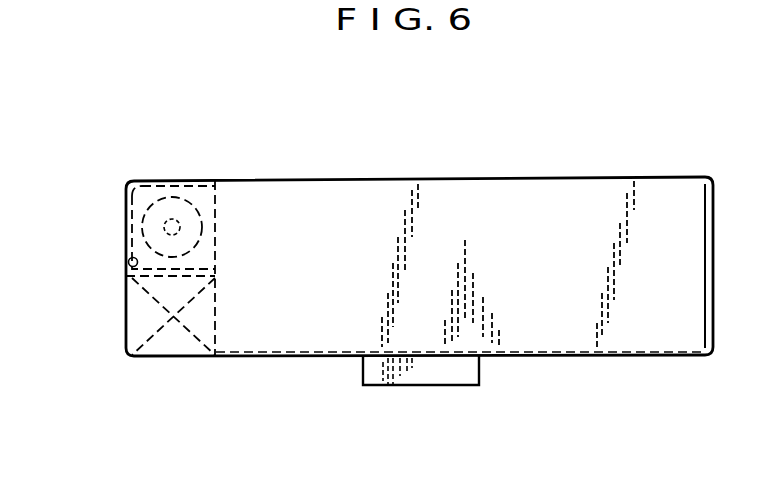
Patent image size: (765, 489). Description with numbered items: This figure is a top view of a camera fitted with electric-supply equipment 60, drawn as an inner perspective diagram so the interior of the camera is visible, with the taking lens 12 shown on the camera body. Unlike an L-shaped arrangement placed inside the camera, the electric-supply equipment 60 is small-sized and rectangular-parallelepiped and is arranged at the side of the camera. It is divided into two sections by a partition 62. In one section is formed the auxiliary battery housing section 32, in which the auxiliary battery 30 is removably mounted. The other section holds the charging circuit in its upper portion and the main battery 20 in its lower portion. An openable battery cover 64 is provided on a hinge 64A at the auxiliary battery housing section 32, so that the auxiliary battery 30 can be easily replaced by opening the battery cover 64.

The taking lens 12 is at (420, 387).
The main battery 20 is at (173, 360).
The auxiliary battery 30 is at (172, 193).
The auxiliary battery housing section 32 is at (212, 180).
The electric-supply equipment 60 is at (117, 280).
The partition 62 is at (197, 262).
The battery cover 64 is at (143, 181).
The hinge 64A is at (129, 261).